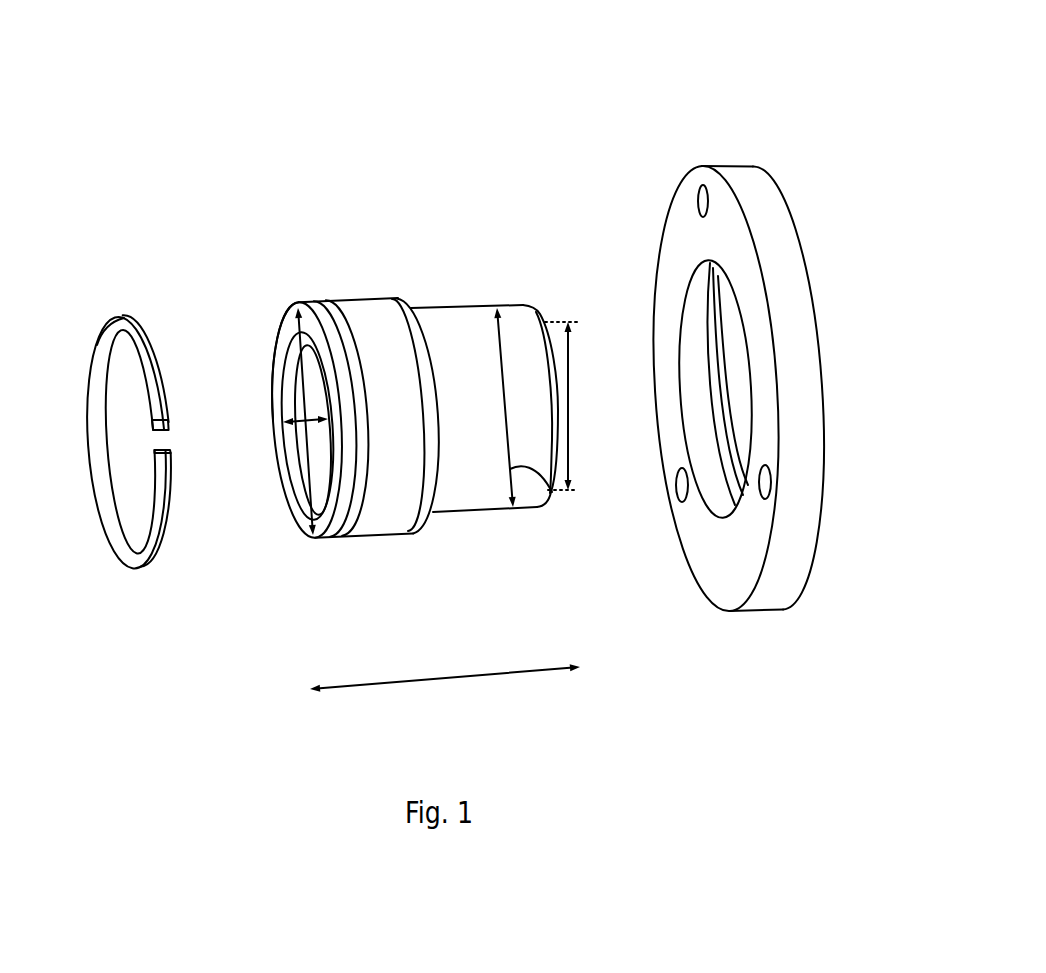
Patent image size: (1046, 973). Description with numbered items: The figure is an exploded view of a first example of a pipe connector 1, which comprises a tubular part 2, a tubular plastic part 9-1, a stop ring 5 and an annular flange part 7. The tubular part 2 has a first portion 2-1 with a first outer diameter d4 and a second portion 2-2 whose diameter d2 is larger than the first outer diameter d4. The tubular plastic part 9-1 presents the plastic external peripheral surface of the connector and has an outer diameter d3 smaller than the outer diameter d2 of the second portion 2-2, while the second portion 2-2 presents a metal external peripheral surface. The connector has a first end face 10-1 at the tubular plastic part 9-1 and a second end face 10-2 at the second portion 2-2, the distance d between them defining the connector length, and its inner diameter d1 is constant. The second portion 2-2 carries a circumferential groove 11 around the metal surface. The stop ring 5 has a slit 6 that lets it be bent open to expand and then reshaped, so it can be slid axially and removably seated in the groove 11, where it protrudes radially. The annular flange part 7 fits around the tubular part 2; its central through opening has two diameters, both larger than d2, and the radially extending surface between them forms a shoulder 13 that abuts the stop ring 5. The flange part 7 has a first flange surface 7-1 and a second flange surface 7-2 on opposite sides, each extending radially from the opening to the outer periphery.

The pipe connector 1 is at (495, 84).
The tubular part 2 is at (390, 212).
The first portion 2-1 is at (543, 518).
The second portion 2-2 is at (315, 546).
The stop ring 5 is at (124, 318).
The slit 6 is at (155, 439).
The annular flange part 7 is at (790, 228).
The first flange surface 7-1 is at (748, 293).
The second flange surface 7-2 is at (820, 485).
The tubular plastic part 9-1 is at (440, 308).
The first end face 10-1 is at (542, 313).
The second end face 10-2 is at (279, 337).
The circumferential groove 11 is at (352, 343).
The shoulder 13 is at (712, 377).
The length of the pipe connector d is at (445, 686).
The inner diameter d1 is at (322, 502).
The outer diameter of the second portion d2 is at (300, 530).
The outer diameter of the tubular plastic part d3 is at (552, 494).
The first outer diameter d4 is at (574, 406).